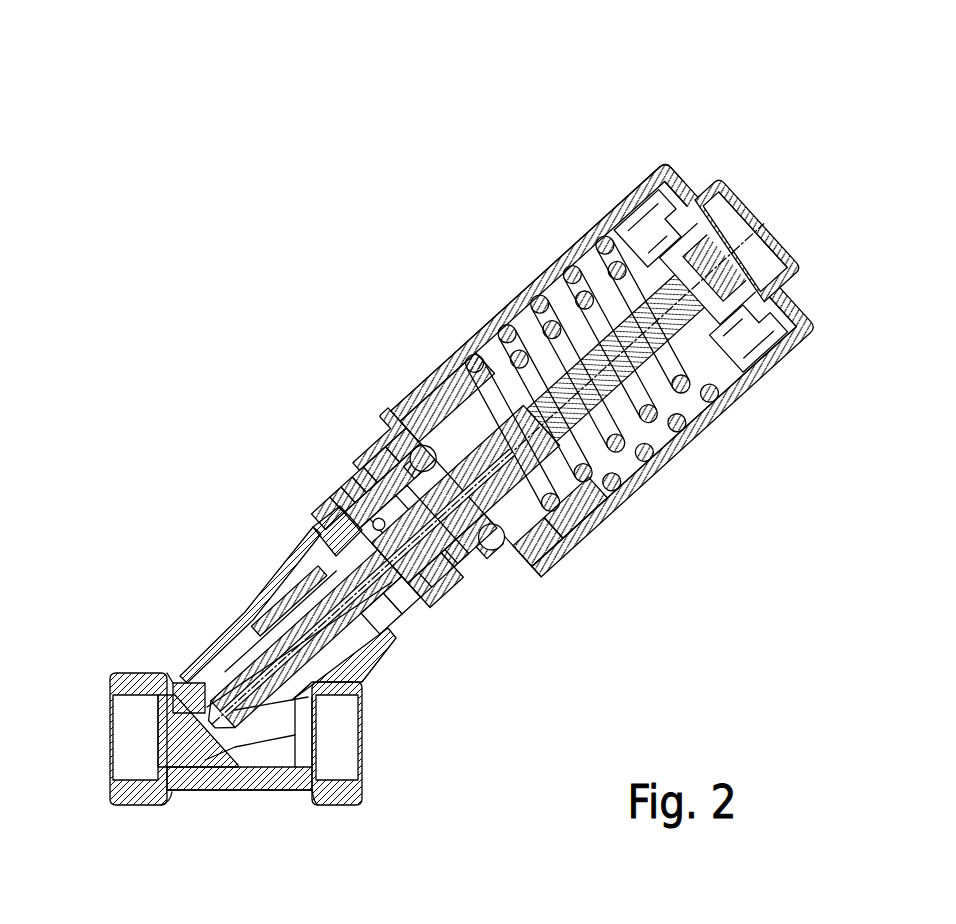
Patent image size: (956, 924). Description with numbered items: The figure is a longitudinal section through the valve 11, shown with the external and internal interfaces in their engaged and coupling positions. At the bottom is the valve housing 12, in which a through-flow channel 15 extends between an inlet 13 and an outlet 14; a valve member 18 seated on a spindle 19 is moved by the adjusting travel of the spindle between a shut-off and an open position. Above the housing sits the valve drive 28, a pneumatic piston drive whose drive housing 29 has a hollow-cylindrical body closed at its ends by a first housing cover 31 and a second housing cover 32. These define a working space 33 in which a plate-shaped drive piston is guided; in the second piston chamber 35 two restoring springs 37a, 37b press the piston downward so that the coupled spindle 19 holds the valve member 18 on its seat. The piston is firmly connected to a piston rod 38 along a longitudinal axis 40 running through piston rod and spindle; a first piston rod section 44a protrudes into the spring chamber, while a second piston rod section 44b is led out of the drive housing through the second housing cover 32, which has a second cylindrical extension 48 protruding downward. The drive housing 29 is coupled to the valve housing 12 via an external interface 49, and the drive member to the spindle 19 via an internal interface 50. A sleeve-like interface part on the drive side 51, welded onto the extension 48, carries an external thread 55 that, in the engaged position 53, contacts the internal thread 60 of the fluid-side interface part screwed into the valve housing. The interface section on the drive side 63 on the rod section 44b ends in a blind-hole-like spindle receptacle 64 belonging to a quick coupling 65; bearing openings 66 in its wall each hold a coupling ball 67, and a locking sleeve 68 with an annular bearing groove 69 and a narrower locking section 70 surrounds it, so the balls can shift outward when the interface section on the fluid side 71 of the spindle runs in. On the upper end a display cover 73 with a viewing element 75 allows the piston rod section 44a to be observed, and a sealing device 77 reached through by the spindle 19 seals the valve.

The valve 11 is at (617, 114).
The valve housing 12 is at (326, 821).
The inlet 13 is at (118, 750).
The outlet 14 is at (345, 768).
The through-flow channel 15 is at (288, 791).
The valve member 18 is at (196, 675).
The spindle 19 is at (262, 708).
The valve drive 28 is at (496, 284).
The drive housing 29 is at (653, 499).
The first housing cover 31 is at (746, 352).
The second housing cover 32 is at (381, 394).
The working space 33 is at (646, 456).
The second piston chamber 35 is at (554, 300).
The first restoring spring 37a is at (718, 400).
The second restoring spring 37b is at (617, 268).
The piston rod 38 is at (590, 515).
The longitudinal axis 40 is at (778, 208).
The first piston rod section 44a is at (652, 440).
The second piston rod section 44b is at (545, 566).
The second cylindrical extension 48 is at (457, 548).
The external interface 49 is at (318, 510).
The internal interface 50 is at (437, 568).
The interface part on the drive side 51 is at (547, 574).
The engaged position 53 is at (336, 493).
The external thread 55 is at (336, 494).
The internal thread 60 is at (335, 497).
The interface section on the drive side 63 is at (406, 600).
The spindle receptacle 64 is at (335, 560).
The quick coupling 65 is at (358, 529).
The bearing openings 66 is at (443, 583).
The coupling ball 67 is at (427, 592).
The locking sleeve 68 is at (480, 560).
The annular bearing groove 69 is at (353, 486).
The locking section 70 is at (380, 457).
The interface section on the fluid side 71 is at (379, 637).
The display cover 73 is at (672, 148).
The viewing element 75 is at (745, 205).
The sealing device 77 is at (270, 618).